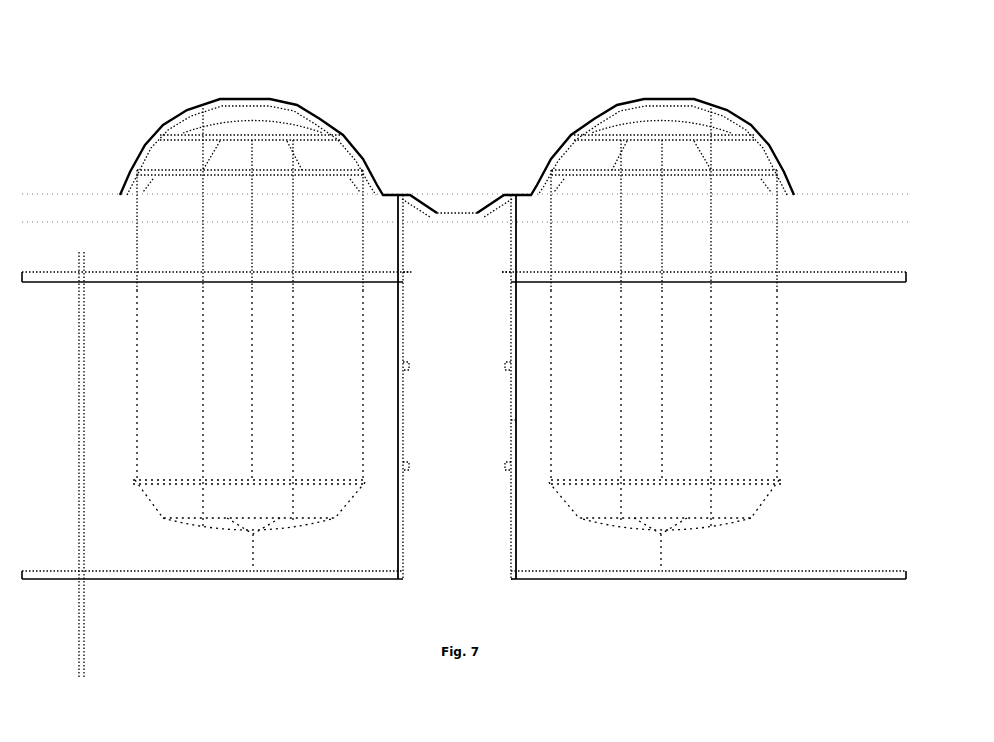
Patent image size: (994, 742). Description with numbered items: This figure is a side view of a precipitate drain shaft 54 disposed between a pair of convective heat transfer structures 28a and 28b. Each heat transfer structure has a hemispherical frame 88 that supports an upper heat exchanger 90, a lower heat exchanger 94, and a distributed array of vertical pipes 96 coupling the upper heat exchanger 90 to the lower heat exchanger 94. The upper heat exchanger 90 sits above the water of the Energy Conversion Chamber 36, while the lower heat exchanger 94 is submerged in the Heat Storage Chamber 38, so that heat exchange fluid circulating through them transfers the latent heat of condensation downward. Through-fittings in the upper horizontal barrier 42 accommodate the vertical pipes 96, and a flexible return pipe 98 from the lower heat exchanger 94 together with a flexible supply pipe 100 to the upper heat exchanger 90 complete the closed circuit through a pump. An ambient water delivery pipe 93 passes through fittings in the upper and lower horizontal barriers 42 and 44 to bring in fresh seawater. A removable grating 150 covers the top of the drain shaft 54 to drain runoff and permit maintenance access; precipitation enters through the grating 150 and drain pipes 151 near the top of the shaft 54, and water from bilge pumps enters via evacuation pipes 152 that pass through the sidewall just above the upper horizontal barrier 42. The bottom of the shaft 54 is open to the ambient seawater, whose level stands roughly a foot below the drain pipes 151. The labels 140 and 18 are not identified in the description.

The heat transfer structure 28a is at (142, 117).
The heat transfer structure 28b is at (772, 117).
The hemispherical frame 88 is at (301, 106).
The upper heat exchanger 90 is at (203, 127).
The precipitate drain shaft 54 is at (473, 113).
The removable grating 150 is at (459, 193).
The drain pipes 151 is at (457, 212).
The evacuation pipes 152 is at (501, 272).
The flexible supply pipe 100 is at (251, 244).
The Energy Conversion Chamber 36 is at (465, 227).
The upper horizontal barrier 42 is at (62, 284).
The vertical pipes 96 is at (136, 360).
The center support 140 is at (457, 387).
The Heat Storage Chamber 38 is at (685, 421).
The lower heat exchanger 94 is at (153, 497).
The flexible return pipe 98 is at (251, 550).
The lower horizontal barrier 44 is at (125, 581).
The ambient water delivery pipe 93 is at (86, 634).
The floor 18 is at (539, 605).